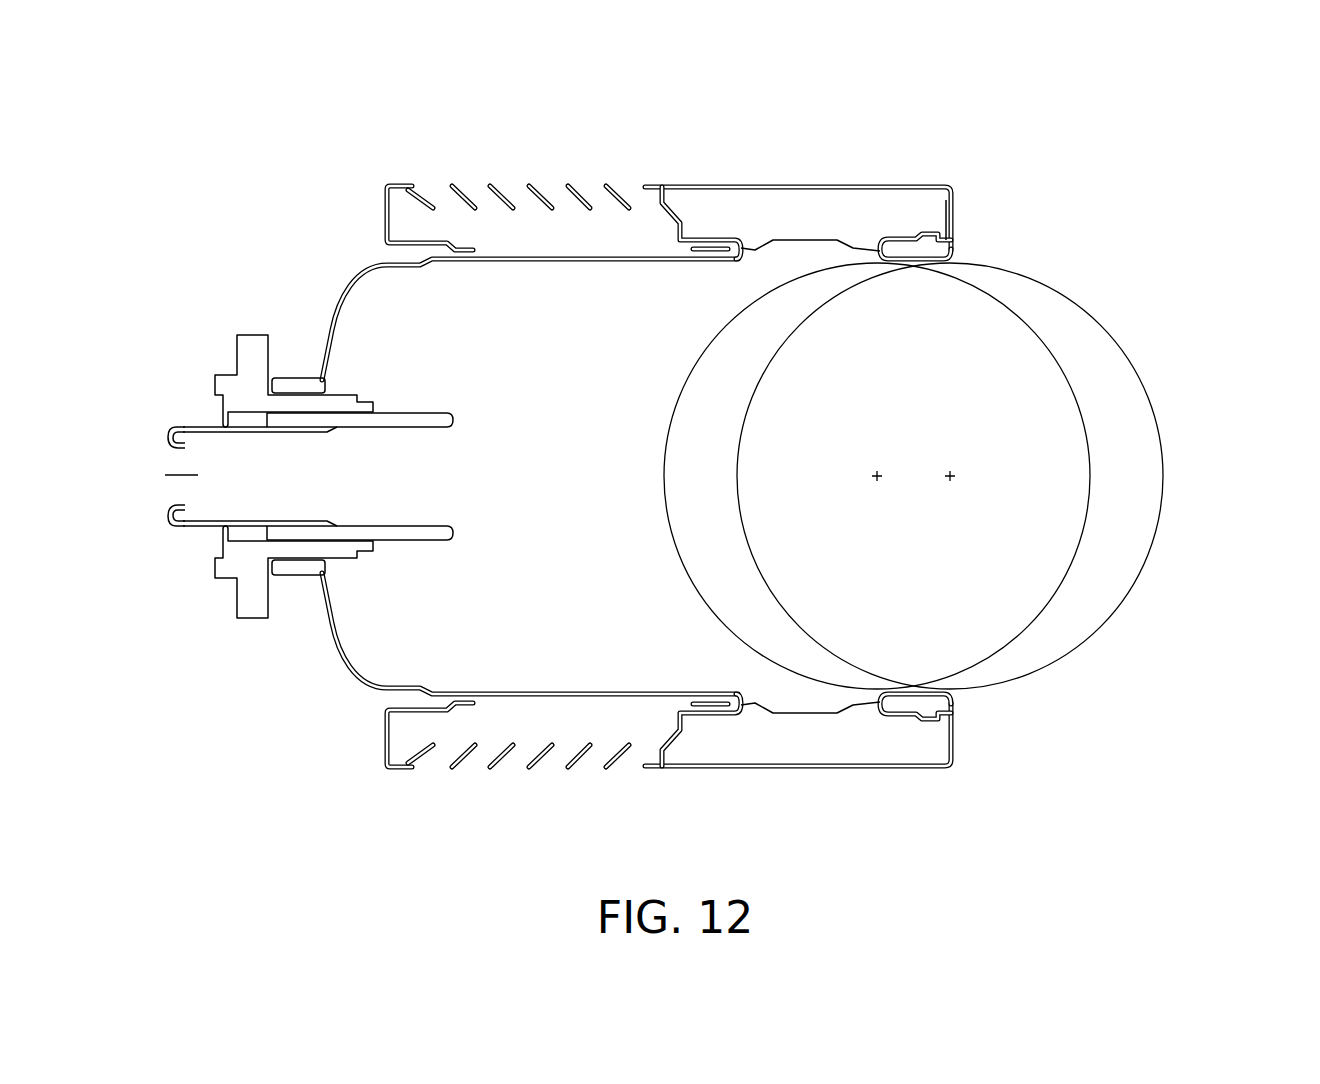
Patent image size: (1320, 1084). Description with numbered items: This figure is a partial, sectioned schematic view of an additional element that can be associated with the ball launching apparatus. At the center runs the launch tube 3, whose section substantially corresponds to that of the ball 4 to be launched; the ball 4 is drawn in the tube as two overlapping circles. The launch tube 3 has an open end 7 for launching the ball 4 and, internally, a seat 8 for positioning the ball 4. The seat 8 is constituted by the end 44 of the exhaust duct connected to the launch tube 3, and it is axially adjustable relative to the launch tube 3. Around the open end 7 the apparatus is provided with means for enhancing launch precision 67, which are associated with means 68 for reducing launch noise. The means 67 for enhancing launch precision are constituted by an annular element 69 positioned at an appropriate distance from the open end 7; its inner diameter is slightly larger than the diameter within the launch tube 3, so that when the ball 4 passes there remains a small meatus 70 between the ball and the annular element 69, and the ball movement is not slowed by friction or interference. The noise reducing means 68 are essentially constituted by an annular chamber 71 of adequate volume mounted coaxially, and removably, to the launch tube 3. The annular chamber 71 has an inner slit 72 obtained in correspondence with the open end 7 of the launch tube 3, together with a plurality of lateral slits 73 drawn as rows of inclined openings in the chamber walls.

The launch tube 3 is at (522, 425).
The ball 4 is at (706, 450).
The open end 7 is at (752, 285).
The seat 8 is at (427, 467).
The end of the exhaust duct 44 is at (443, 533).
The means for enhancing launch precision 67 is at (973, 255).
The means for reducing launch noise 68 is at (638, 150).
The annular element 69 is at (913, 257).
The meatus 70 is at (955, 697).
The annular chamber 71 is at (642, 718).
The inner slit 72 is at (817, 692).
The lateral slits 73 is at (470, 176).